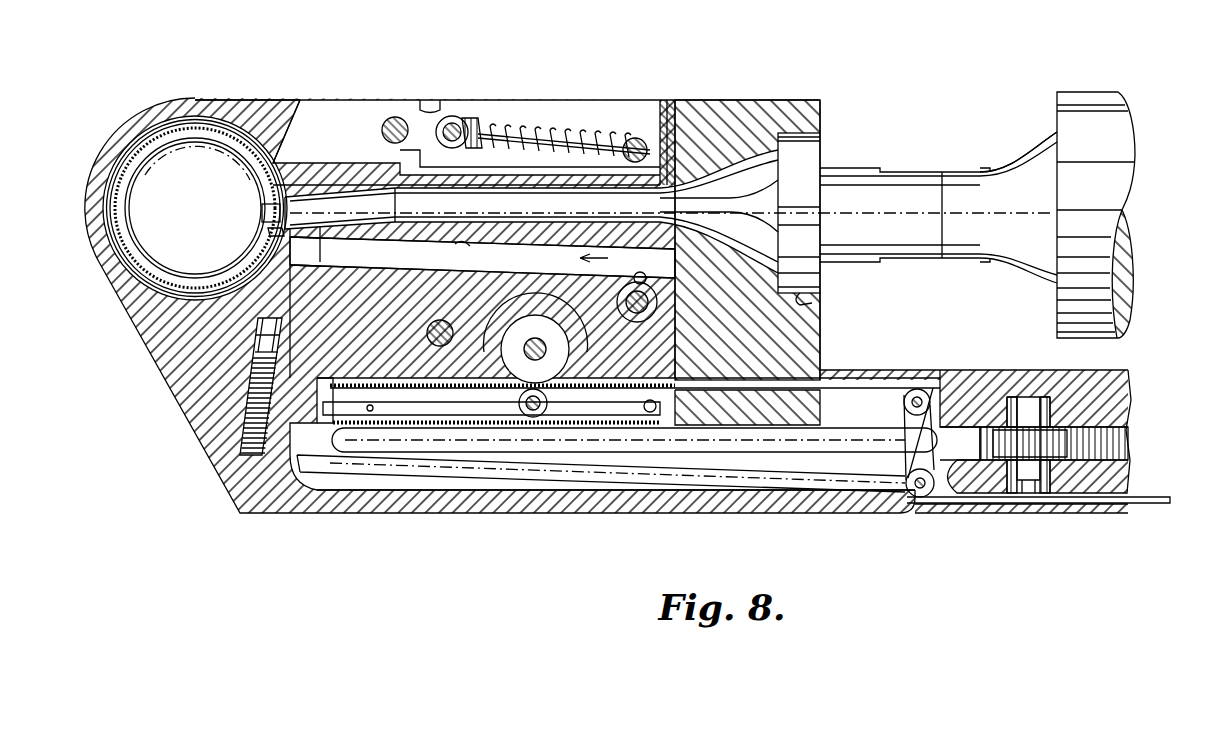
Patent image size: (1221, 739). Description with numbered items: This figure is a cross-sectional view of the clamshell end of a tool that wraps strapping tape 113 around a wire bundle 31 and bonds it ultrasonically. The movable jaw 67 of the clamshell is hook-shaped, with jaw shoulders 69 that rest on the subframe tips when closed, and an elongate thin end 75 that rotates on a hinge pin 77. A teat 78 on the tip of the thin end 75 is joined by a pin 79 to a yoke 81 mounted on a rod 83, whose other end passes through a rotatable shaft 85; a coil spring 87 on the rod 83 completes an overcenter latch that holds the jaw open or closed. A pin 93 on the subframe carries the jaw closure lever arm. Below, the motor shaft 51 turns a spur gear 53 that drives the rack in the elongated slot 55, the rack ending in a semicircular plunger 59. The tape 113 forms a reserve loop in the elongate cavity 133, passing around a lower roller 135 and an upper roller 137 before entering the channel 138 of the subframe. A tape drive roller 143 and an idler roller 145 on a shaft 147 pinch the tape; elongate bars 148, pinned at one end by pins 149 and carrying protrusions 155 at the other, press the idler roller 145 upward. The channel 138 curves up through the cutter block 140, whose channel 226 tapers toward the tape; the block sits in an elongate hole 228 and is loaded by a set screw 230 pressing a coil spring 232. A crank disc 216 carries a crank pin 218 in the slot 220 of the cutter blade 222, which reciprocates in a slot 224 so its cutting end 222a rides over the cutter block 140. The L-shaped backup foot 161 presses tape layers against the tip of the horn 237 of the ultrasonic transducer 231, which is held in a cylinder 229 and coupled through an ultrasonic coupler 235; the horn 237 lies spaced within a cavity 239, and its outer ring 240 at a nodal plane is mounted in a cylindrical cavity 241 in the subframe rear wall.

The wire bundle 31 is at (170, 150).
The shaft 51 is at (1028, 400).
The spur gear 53 is at (1062, 458).
The elongated slot 55 is at (1128, 446).
The semicircular plunger 59 is at (960, 430).
The movable jaw 67 is at (212, 100).
The jaw shoulders 69 is at (298, 110).
The thin end 75 is at (360, 112).
The hinge pin 77 is at (400, 118).
The teat 78 is at (428, 110).
The pin 79 is at (458, 125).
The yoke 81 is at (485, 130).
The rod 83 is at (550, 125).
The shaft 85 is at (640, 140).
The coil spring 87 is at (590, 130).
The pin 93 is at (427, 333).
The strapping tape 113 is at (1160, 506).
The elongate cavity 133 is at (428, 490).
The lower roller 135 is at (920, 497).
The upper roller 137 is at (922, 388).
The channel 138 is at (322, 340).
The cutter block 140 is at (256, 348).
The tape drive roller 143 is at (512, 330).
The idler roller 145 is at (540, 412).
The shaft 147 is at (528, 412).
The elongate bars 148 is at (625, 410).
The pins 149 is at (656, 412).
The protrusions 155 is at (325, 430).
The backup foot 161 is at (262, 218).
The crank disc 216 is at (678, 326).
The crank pin 218 is at (650, 278).
The slot 220 is at (660, 300).
The cutter blade 222 is at (488, 266).
The cutting end 222a is at (268, 232).
The slot 224 is at (329, 251).
The channel 226 is at (262, 330).
The elongate hole 228 is at (250, 368).
The cylinder 229 is at (1118, 158).
The set screw 230 is at (242, 418).
The ultrasonic transducer 231 is at (1034, 130).
The coil spring 232 is at (246, 386).
The ultrasonic coupler 235 is at (990, 175).
The horn 237 is at (745, 190).
The cavity 239 is at (462, 242).
The outer ring 240 is at (835, 140).
The cylindrical cavity 241 is at (815, 300).